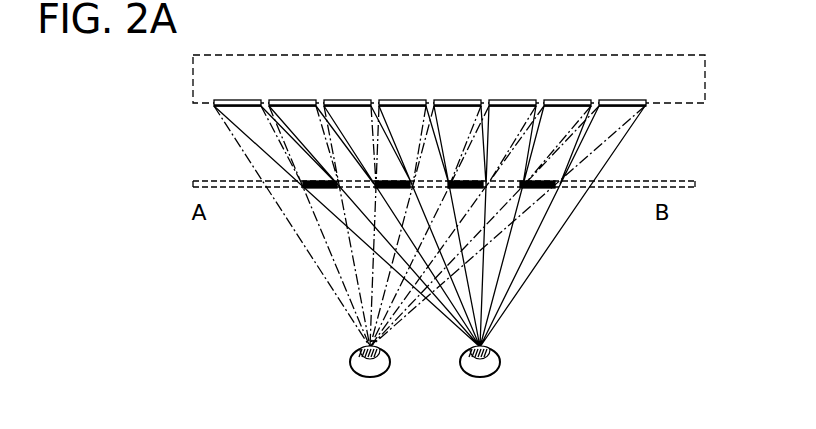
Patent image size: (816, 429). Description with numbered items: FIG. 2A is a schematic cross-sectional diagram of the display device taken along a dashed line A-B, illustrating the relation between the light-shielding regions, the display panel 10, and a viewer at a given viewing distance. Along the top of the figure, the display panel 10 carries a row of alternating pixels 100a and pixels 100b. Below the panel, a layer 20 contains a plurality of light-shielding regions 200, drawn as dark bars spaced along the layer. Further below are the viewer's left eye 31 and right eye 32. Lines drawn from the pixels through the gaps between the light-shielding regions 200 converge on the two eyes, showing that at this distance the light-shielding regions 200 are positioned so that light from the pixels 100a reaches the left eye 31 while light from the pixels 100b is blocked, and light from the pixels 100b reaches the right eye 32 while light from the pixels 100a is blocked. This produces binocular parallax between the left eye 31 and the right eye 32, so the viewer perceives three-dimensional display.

The display panel 10 is at (449, 79).
The pixels 100a is at (238, 99).
The pixels 100b is at (293, 99).
The parallax barrier 20 is at (695, 184).
The light-shielding region 200 is at (304, 187).
The left eye 31 is at (429, 260).
The right eye 32 is at (429, 260).